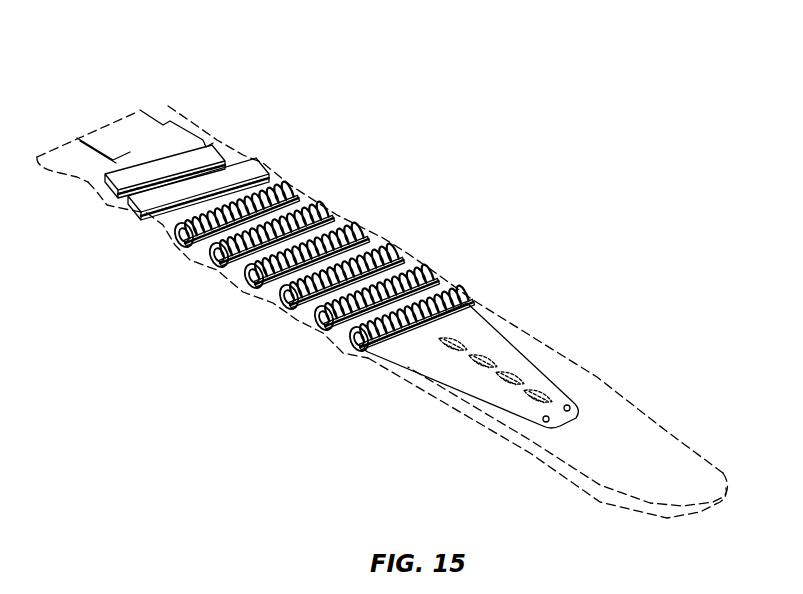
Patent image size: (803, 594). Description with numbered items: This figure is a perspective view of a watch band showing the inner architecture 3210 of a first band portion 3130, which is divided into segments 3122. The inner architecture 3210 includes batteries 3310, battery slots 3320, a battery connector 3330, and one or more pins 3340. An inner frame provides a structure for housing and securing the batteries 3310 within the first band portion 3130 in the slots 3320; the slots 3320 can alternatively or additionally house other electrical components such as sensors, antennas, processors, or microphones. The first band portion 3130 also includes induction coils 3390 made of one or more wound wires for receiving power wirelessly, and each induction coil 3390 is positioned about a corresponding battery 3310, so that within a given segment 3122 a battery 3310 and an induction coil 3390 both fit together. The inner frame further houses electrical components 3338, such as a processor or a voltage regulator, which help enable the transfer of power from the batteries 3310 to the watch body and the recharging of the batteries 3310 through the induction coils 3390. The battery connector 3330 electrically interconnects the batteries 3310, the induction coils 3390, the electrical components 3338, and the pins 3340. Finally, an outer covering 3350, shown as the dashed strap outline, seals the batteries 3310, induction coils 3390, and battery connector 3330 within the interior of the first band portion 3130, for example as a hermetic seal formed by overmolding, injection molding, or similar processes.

The first band portion 3130 is at (401, 95).
The segments 3122 is at (352, 212).
The inner architecture 3210 is at (200, 350).
The batteries 3310 is at (362, 360).
The battery slots 3320 is at (334, 338).
The battery connector 3330 is at (302, 190).
The electrical components 3338 is at (211, 138).
The pins 3340 is at (153, 105).
The outer covering 3350 is at (663, 432).
The induction coils 3390 is at (428, 276).